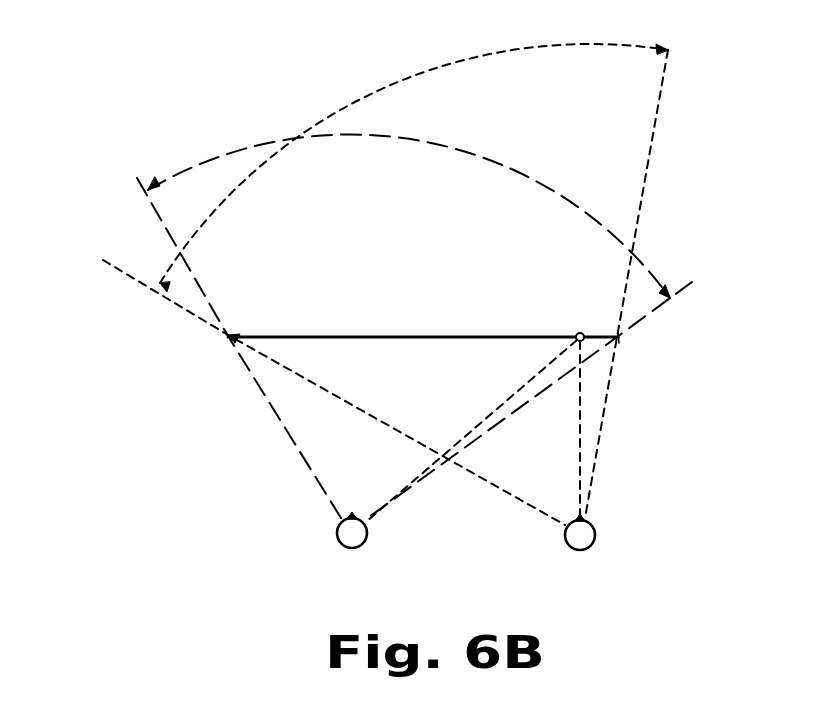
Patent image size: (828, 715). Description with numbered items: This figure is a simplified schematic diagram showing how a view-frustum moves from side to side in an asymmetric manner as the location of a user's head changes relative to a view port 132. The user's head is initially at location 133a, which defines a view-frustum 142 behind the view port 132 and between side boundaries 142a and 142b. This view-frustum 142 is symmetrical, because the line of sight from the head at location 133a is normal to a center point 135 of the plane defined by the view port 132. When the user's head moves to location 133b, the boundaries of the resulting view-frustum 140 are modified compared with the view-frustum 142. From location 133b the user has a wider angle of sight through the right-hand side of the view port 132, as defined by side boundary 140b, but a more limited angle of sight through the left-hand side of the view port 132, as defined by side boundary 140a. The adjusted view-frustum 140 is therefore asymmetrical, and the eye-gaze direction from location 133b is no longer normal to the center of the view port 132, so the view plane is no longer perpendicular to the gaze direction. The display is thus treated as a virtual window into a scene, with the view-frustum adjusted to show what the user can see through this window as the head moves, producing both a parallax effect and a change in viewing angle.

The view port 132 is at (602, 338).
The location 133a is at (595, 543).
The location 133b is at (340, 544).
The center point 135 is at (580, 332).
The view-frustum 140 is at (643, 288).
The side boundary 140a is at (151, 198).
The side boundary 140b is at (650, 300).
The view-frustum 142 is at (195, 294).
The side boundary 142a is at (152, 291).
The side boundary 142b is at (661, 110).